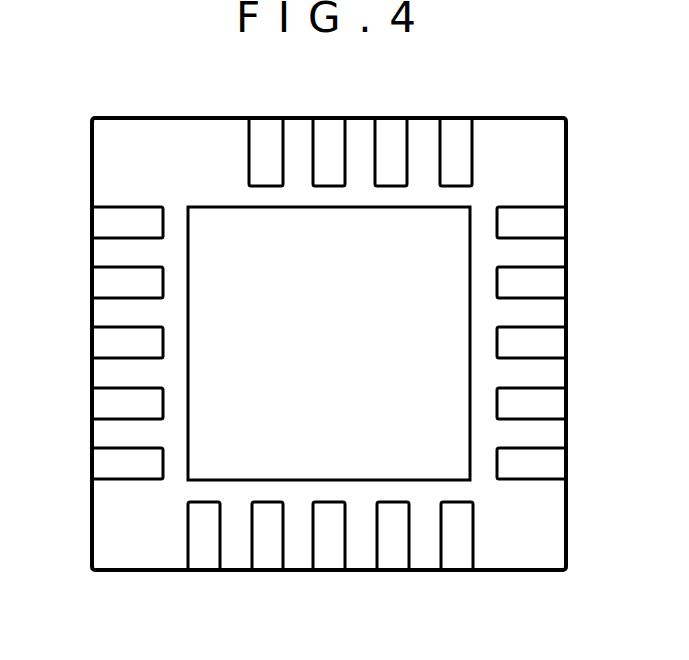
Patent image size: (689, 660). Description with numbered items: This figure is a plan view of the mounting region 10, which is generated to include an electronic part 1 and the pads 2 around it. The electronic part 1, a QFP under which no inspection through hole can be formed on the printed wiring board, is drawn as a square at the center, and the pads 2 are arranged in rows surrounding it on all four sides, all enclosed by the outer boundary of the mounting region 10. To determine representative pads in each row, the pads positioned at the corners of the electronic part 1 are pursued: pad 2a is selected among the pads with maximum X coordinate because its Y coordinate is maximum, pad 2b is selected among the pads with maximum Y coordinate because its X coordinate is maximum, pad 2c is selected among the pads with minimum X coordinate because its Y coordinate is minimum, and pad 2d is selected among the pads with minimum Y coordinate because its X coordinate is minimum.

The electronic part 1 is at (232, 207).
The pads 2 is at (611, 80).
The pad 2a is at (543, 207).
The pad 2b is at (472, 162).
The pad 2c is at (128, 480).
The pad 2d is at (188, 532).
The mounting region 10 is at (513, 570).